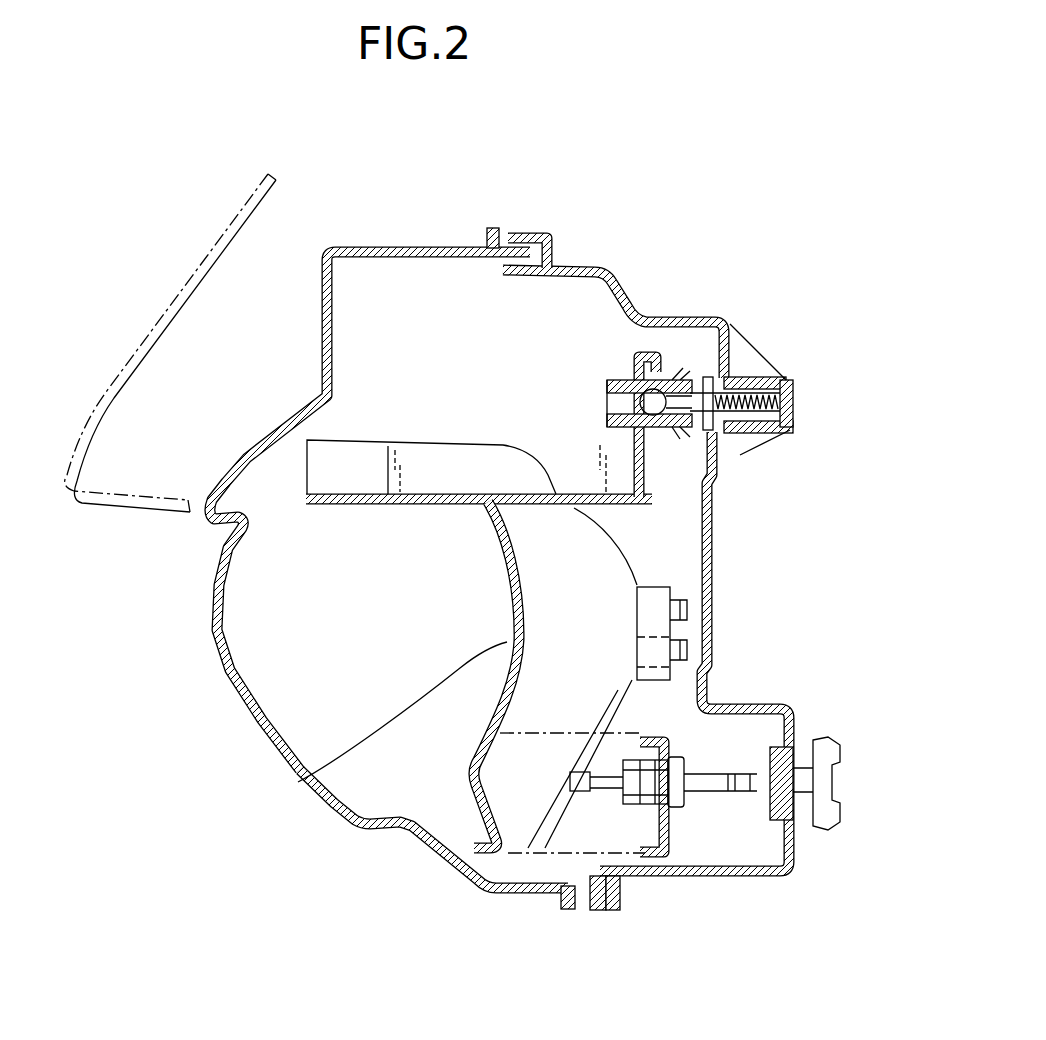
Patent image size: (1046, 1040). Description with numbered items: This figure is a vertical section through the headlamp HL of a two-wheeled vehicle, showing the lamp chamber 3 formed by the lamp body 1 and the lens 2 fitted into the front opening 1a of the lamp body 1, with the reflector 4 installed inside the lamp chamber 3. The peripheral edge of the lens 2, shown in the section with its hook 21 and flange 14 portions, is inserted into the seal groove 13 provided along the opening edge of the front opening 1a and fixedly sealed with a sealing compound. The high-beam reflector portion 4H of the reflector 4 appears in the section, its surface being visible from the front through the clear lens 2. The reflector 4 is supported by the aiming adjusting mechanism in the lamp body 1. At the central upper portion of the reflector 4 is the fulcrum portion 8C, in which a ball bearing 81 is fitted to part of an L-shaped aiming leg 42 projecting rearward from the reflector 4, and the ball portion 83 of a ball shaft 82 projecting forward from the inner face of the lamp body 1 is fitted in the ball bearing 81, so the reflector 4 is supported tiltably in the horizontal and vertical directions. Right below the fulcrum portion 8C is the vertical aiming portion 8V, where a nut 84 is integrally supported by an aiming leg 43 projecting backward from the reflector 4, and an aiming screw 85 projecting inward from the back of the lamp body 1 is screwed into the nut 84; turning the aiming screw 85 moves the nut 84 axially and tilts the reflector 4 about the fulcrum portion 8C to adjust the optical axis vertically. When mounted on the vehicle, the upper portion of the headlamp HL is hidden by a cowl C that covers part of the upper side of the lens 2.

The vehicle body C is at (240, 218).
The lamp body 1 is at (712, 541).
The front opening 1a is at (500, 298).
The lens 2 is at (222, 647).
The lamp chamber 3 is at (424, 763).
The reflector 4 is at (315, 780).
The high-beam reflector portion 4H is at (598, 578).
The fulcrum portion 8C is at (687, 355).
The vertical aiming portion 8V is at (738, 840).
The seal groove 13 is at (617, 913).
The lower flange 14 is at (604, 912).
The hook portion 21 is at (577, 910).
The L-shaped aiming leg 42 is at (557, 490).
The aiming leg 43 is at (652, 820).
The ball bearing 81 is at (620, 380).
The ball shaft 82 is at (693, 418).
The ball portion 83 is at (727, 324).
The nut 84 is at (672, 772).
The aiming screw 85 is at (778, 778).
The headlamp HL is at (648, 232).